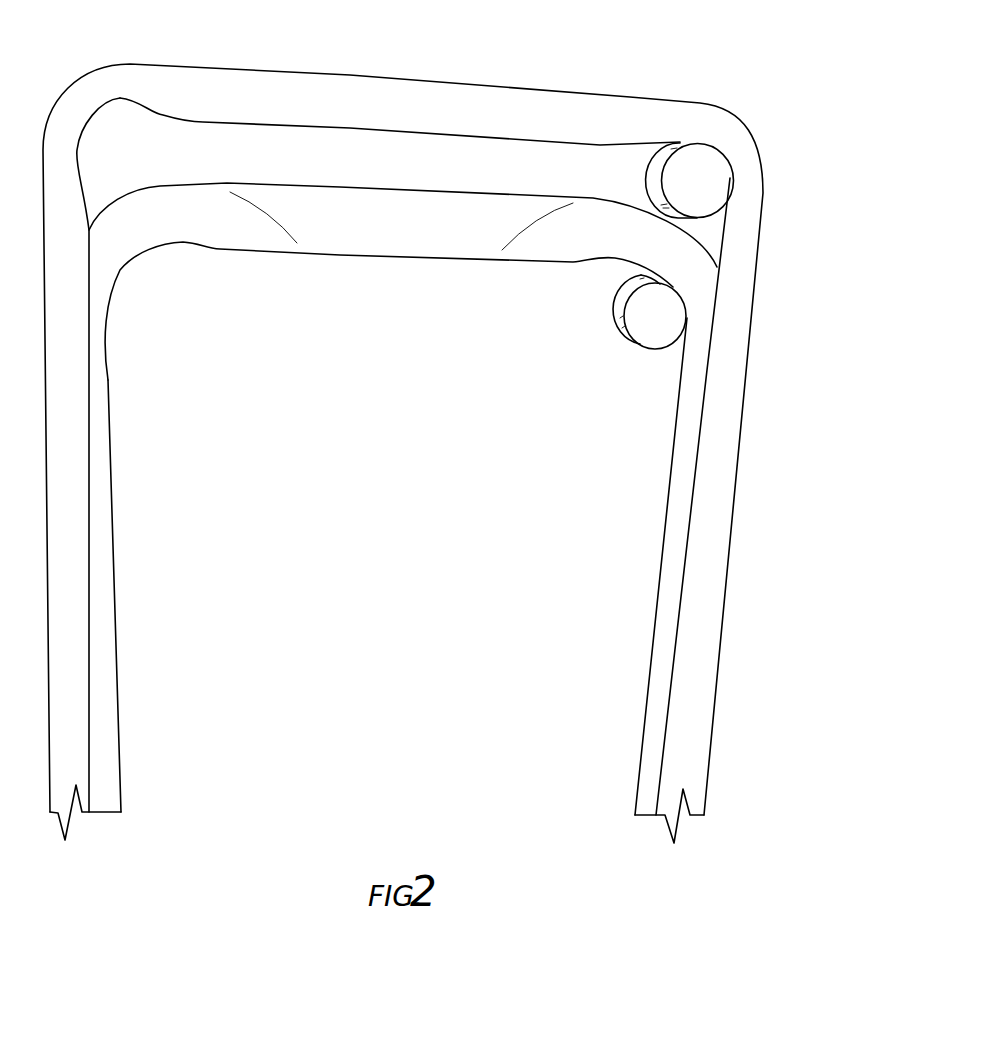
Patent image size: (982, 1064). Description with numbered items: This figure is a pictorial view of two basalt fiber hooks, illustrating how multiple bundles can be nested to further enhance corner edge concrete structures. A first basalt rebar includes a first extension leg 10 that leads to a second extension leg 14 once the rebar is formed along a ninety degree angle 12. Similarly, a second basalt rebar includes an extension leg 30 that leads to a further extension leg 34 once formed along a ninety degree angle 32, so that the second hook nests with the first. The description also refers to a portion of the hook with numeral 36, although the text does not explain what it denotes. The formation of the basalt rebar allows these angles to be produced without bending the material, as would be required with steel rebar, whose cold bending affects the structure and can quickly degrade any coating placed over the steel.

The first extension leg 10 is at (736, 504).
The ninety degree angle 12 is at (752, 138).
The second extension leg 14 is at (528, 88).
The second extension leg 30 is at (715, 672).
The ninety degree angle 32 is at (705, 243).
The second extension leg 34 is at (287, 183).
The left leg 36 is at (115, 592).